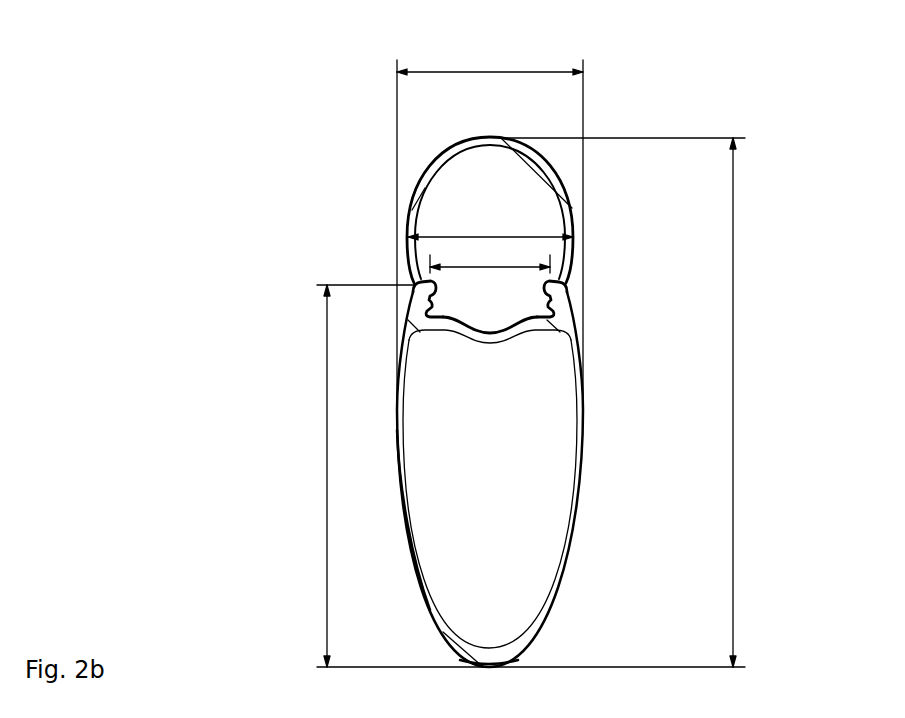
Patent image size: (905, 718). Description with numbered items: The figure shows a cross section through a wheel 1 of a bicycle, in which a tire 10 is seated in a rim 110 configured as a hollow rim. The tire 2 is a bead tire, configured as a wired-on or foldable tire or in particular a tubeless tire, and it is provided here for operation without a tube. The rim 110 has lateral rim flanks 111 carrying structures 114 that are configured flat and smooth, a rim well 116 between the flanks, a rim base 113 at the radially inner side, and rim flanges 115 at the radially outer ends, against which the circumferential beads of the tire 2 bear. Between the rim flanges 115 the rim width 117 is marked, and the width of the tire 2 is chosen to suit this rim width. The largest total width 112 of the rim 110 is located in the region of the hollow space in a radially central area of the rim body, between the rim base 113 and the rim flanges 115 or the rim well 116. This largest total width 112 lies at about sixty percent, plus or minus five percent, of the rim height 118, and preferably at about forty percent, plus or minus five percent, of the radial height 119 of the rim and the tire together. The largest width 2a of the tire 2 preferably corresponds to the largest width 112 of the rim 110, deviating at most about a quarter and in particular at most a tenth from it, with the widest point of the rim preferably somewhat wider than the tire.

The wheel 1 is at (230, 86).
The tire 10 is at (438, 149).
The tire 2 is at (414, 208).
The largest width of the tire 2a is at (491, 235).
The rim 110 is at (563, 576).
The lateral rim flanks 111 is at (581, 484).
The largest total width of the rim 112 is at (474, 70).
The rim base 113 is at (488, 668).
The structures 114 is at (404, 575).
The rim flanges 115 is at (563, 293).
The rim well 116 is at (486, 318).
The rim width 117 is at (468, 267).
The rim height 118 is at (325, 497).
The radial height of the rim and the tire 119 is at (735, 434).